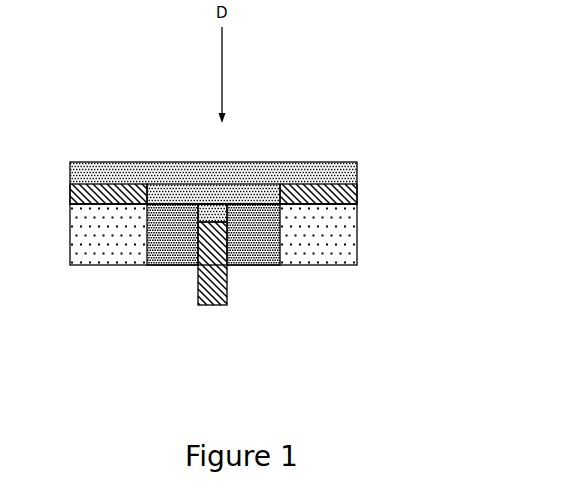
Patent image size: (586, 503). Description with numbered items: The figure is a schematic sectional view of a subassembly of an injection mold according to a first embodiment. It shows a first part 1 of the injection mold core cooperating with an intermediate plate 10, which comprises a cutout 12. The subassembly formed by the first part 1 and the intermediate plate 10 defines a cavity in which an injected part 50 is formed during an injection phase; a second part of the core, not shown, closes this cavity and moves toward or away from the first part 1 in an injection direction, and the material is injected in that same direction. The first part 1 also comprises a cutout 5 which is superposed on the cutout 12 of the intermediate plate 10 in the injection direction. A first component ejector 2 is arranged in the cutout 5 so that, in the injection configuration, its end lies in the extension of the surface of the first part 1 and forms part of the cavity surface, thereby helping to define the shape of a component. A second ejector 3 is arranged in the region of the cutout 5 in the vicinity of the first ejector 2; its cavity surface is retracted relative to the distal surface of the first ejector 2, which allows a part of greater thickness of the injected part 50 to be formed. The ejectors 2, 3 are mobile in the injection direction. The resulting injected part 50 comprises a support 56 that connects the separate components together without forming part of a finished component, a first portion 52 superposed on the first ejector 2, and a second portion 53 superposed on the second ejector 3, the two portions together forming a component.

The first part 1 is at (357, 248).
The first component ejector 2 is at (263, 268).
The second ejector 3 is at (217, 306).
The cutout 5 is at (157, 253).
The intermediate plate 10 is at (358, 193).
The cutout 12 is at (280, 190).
The injected part 50 is at (158, 162).
The first portion 52 is at (247, 197).
The second portion 53 is at (208, 210).
The support 56 is at (96, 162).